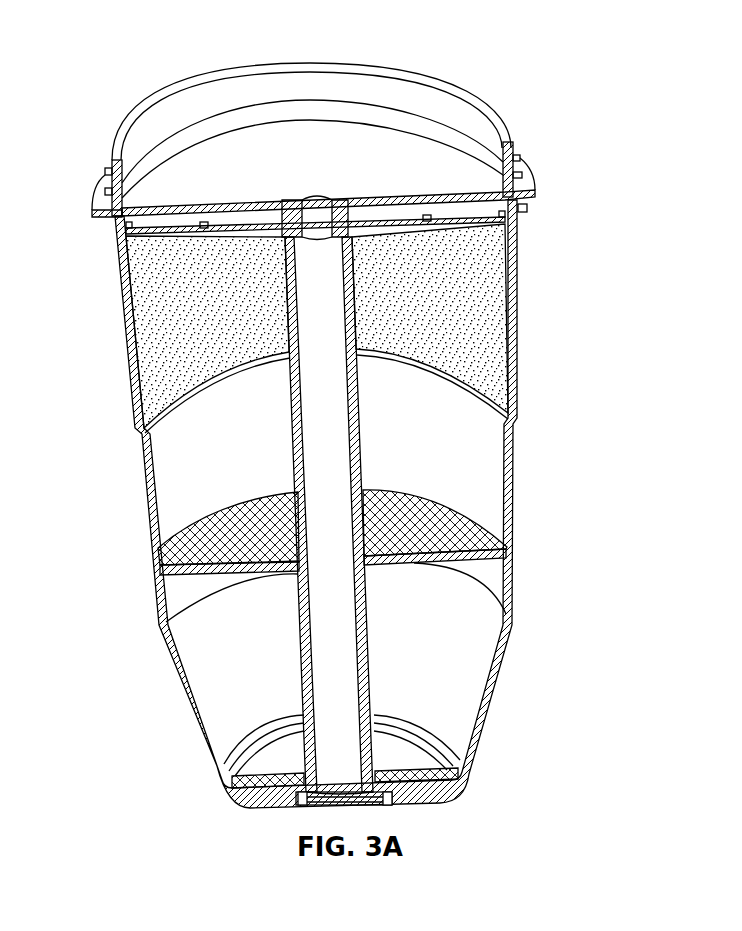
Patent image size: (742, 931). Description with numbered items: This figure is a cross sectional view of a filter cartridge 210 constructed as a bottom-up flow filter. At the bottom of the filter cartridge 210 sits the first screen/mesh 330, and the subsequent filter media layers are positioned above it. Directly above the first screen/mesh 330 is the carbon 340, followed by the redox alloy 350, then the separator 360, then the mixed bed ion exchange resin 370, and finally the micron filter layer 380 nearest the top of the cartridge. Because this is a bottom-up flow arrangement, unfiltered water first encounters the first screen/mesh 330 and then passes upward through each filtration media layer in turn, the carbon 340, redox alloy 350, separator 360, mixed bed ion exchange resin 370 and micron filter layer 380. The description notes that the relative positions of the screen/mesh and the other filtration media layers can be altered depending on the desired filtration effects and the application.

The filter cartridge 210 is at (569, 84).
The micron filter layer 380 is at (540, 208).
The mixed bed ion exchange resin 370 is at (490, 310).
The separator 360 is at (484, 508).
The redox alloy 350 is at (530, 553).
The carbon 340 is at (462, 624).
The first screen/mesh 330 is at (447, 742).